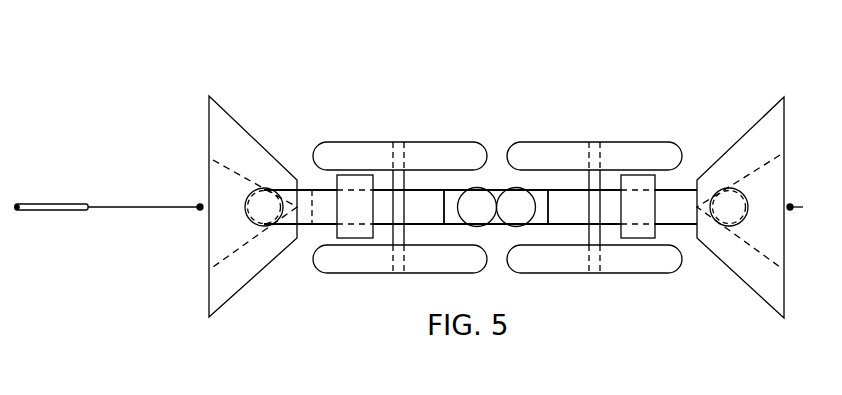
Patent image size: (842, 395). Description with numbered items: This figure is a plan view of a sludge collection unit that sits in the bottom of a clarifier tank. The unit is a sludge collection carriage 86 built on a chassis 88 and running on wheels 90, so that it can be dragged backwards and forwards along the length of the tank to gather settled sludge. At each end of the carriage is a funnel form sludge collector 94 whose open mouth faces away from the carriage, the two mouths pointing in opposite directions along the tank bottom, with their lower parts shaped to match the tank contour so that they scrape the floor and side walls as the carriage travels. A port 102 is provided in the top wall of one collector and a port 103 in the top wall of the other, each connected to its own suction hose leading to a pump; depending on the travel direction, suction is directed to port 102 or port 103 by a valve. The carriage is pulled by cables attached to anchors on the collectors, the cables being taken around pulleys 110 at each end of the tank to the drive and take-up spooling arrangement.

The sludge collection carriage 86 is at (502, 97).
The chassis 88 is at (307, 203).
The wheels 90 is at (567, 148).
The funnel form sludge collector 94 is at (743, 142).
The port 102 is at (262, 207).
The port 103 is at (727, 203).
The pulley 110 is at (57, 204).